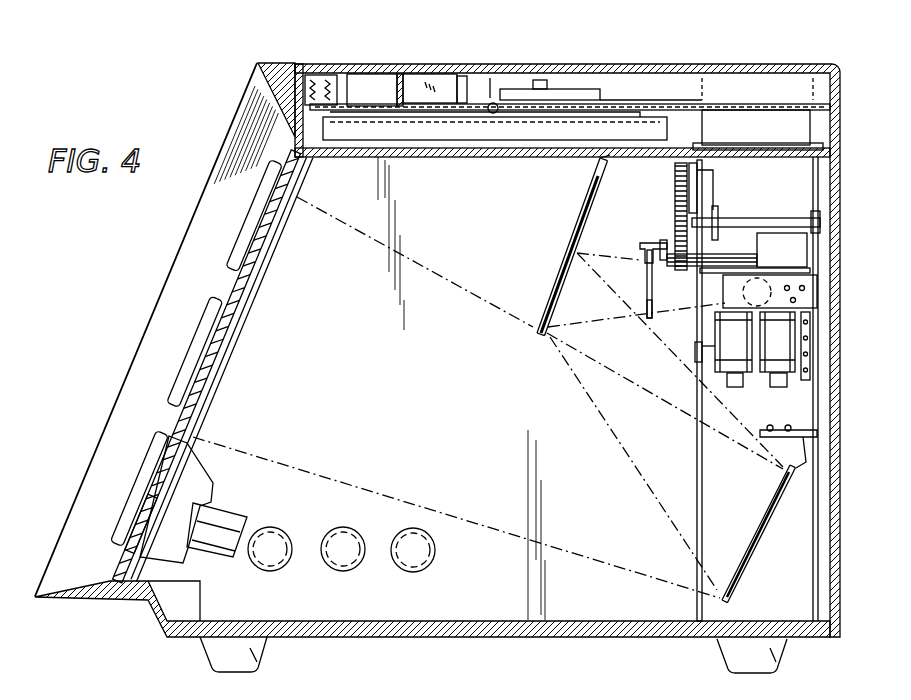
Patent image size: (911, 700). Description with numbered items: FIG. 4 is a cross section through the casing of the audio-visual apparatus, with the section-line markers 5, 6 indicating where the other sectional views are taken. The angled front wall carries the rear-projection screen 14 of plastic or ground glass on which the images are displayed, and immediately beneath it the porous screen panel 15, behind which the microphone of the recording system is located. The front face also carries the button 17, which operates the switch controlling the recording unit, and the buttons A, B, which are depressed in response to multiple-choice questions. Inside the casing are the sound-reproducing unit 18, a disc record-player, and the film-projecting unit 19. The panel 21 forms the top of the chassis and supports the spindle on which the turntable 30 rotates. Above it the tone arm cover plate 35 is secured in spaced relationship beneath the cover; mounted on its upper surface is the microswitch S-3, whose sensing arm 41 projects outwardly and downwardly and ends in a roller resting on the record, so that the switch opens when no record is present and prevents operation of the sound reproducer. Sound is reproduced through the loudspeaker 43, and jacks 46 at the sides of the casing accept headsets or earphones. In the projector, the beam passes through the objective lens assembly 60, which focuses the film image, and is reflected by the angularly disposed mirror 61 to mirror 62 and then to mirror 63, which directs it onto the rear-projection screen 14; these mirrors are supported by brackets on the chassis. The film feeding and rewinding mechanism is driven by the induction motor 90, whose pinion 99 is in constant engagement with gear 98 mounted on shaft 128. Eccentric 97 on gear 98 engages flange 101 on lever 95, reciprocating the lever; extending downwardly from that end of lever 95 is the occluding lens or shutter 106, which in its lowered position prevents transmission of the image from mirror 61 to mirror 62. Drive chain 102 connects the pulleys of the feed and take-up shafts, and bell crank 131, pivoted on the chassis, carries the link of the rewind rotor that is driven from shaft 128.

The section line 5- 5 is at (232, 71).
The section line 6- 6 is at (403, 18).
The rear-projection screen 14 is at (231, 287).
The porous screen panel 15 is at (140, 508).
The button 17 is at (141, 470).
The sound-reproducing unit 18 is at (637, 97).
The film-projecting unit 19 is at (657, 363).
The panel 21 is at (347, 156).
The turntable 30 is at (437, 128).
The tone arm cover plate 35 is at (722, 103).
The sensing arm 41 is at (489, 97).
The loudspeaker 43 is at (188, 489).
The jacks 46 is at (396, 570).
The objective lens assembly 60 is at (744, 316).
The mirror 61 is at (778, 292).
The mirror 62 is at (556, 281).
The mirror 63 is at (747, 554).
The induction motor 90 is at (783, 246).
The lever 95 is at (640, 250).
The eccentric 97 is at (647, 283).
The gear 98 is at (674, 190).
The pinion 99 is at (732, 262).
The flange 101 is at (660, 243).
The drive chain 102 is at (805, 380).
The occluding lens or shutter 106 is at (660, 292).
The shaft 128 is at (769, 217).
The bell crank 131 is at (712, 172).
The microswitch S-3 is at (583, 96).
The button A is at (243, 223).
The button B is at (193, 342).